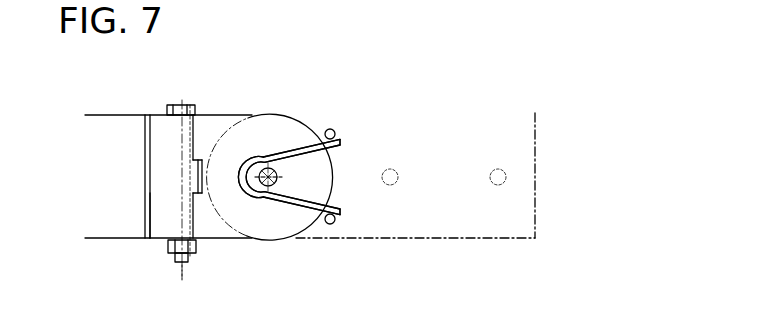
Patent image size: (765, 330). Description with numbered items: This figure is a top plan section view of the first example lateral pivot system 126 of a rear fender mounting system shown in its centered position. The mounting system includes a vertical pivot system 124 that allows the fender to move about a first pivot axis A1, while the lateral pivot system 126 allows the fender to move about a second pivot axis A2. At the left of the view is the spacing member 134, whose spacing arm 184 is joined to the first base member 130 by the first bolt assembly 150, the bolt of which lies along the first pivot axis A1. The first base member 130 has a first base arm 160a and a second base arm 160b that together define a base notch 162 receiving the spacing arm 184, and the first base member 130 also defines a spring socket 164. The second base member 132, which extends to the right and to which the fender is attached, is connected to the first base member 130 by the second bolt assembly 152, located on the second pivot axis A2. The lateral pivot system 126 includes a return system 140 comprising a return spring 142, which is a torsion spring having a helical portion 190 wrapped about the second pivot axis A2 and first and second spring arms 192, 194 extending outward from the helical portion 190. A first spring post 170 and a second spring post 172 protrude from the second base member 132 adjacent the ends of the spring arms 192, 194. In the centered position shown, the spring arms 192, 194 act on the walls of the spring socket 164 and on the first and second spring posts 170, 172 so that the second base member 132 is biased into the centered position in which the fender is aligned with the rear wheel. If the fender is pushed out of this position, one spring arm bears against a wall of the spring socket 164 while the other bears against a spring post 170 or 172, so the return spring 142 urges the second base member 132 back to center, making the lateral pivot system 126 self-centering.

The vertical pivot system 124 is at (180, 97).
The first example lateral pivot system 126 is at (250, 236).
The first base member 130 is at (203, 227).
The second base member 132 is at (493, 113).
The spacing member 134 is at (110, 123).
The return system 140 is at (282, 134).
The return spring 142 is at (271, 150).
The first bolt assembly 150 is at (162, 99).
The second bolt assembly 152 is at (290, 163).
The first base arm 160a is at (160, 213).
The second base arm 160b is at (157, 142).
The base notch 162 is at (158, 162).
The spring socket 164 is at (318, 183).
The first spring post 170 is at (335, 130).
The second spring post 172 is at (333, 224).
The spacing arm 184 is at (162, 180).
The helical portion 190 is at (252, 163).
The first spring arm 192 is at (300, 148).
The second spring arm 194 is at (293, 205).
The first pivot axis A1 is at (180, 272).
The second pivot axis A2 is at (263, 211).